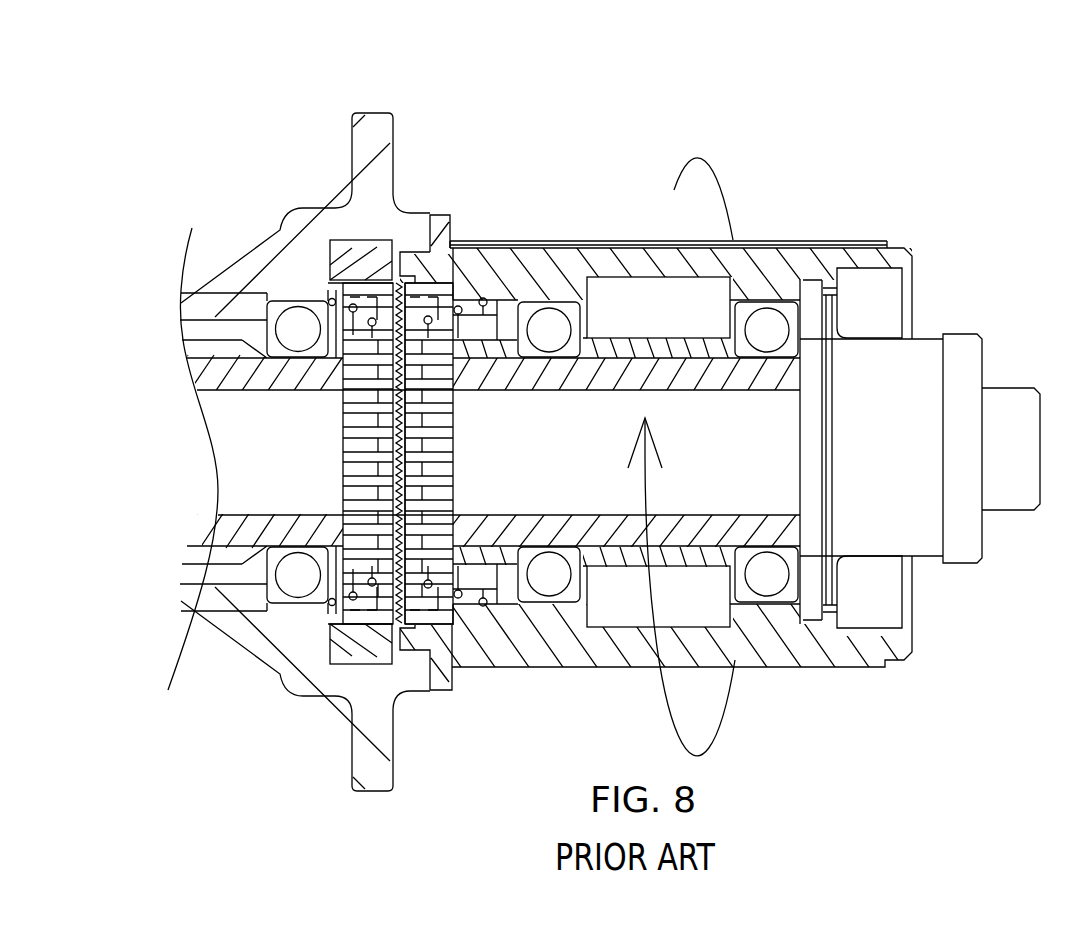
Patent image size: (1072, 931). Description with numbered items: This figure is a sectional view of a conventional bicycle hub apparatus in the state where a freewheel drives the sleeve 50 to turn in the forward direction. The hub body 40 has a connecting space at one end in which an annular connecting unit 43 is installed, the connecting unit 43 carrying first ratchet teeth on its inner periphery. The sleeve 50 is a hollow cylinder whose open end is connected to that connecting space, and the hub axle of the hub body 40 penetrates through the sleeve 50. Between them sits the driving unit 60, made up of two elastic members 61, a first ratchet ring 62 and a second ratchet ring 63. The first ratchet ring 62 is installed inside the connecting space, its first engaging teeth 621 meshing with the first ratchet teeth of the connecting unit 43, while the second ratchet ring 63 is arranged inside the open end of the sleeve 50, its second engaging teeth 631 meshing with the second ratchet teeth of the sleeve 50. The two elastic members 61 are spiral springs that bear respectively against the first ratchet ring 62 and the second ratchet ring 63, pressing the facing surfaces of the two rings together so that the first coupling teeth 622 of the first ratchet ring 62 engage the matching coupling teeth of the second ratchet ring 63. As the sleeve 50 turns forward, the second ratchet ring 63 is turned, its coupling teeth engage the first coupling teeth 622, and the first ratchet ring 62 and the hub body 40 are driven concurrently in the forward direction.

The hub body 40 is at (328, 146).
The connecting unit 43 is at (367, 267).
The sleeve 50 is at (790, 214).
The driving unit 60 is at (300, 490).
The elastic members 61 is at (348, 316).
The first ratchet ring 62 is at (346, 412).
The first engaging teeth 621 is at (346, 364).
The first coupling teeth 622 is at (397, 453).
The second ratchet ring 63 is at (445, 295).
The second engaging teeth 631 is at (443, 322).